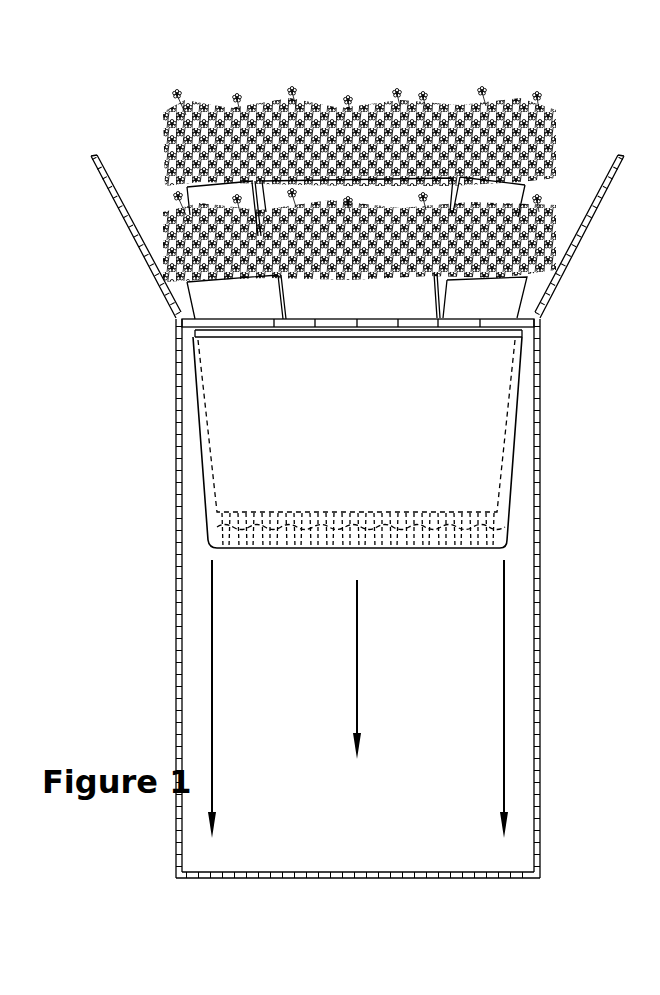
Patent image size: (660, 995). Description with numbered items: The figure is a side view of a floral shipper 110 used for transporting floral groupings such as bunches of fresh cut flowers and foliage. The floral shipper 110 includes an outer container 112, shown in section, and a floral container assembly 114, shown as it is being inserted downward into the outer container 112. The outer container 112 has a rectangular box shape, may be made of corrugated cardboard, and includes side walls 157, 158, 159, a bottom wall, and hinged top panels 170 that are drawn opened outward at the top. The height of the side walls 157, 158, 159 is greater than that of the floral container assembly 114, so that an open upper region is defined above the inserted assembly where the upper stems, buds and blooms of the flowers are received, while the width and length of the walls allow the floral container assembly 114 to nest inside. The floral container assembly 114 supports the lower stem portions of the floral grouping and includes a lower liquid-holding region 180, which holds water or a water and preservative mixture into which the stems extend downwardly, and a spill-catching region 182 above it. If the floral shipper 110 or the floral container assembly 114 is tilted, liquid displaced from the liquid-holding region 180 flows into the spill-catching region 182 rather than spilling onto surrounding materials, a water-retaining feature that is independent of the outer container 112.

The floral shipper 110 is at (152, 366).
The outer container 112 is at (156, 546).
The floral container assembly 114 is at (521, 398).
The side wall 157 is at (178, 692).
The side wall 158 is at (538, 675).
The side wall 159 is at (436, 669).
The hinged top panels 170 is at (132, 232).
The lower liquid-holding region 180 is at (455, 530).
The spill-catching region 182 is at (214, 497).